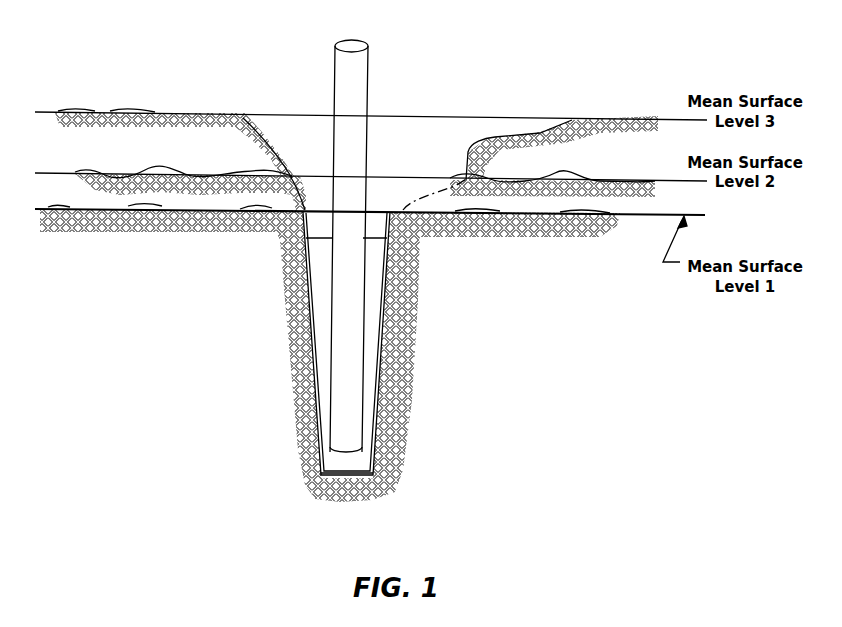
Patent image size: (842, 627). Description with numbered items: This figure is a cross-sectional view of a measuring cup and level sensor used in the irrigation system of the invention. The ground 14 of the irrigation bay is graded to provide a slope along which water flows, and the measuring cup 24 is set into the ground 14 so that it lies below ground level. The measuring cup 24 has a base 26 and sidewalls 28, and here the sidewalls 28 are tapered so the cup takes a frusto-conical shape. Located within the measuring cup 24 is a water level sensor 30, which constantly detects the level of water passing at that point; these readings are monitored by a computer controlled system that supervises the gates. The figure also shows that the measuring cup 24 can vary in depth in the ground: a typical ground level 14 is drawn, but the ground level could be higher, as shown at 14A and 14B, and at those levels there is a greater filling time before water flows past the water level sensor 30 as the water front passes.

The ground 14 is at (650, 213).
The higher ground level 14A is at (310, 178).
The higher ground level 14B is at (283, 113).
The measuring cup 24 is at (424, 323).
The base 26 is at (365, 493).
The sidewalls 28 is at (313, 322).
The water level sensor 30 is at (355, 90).